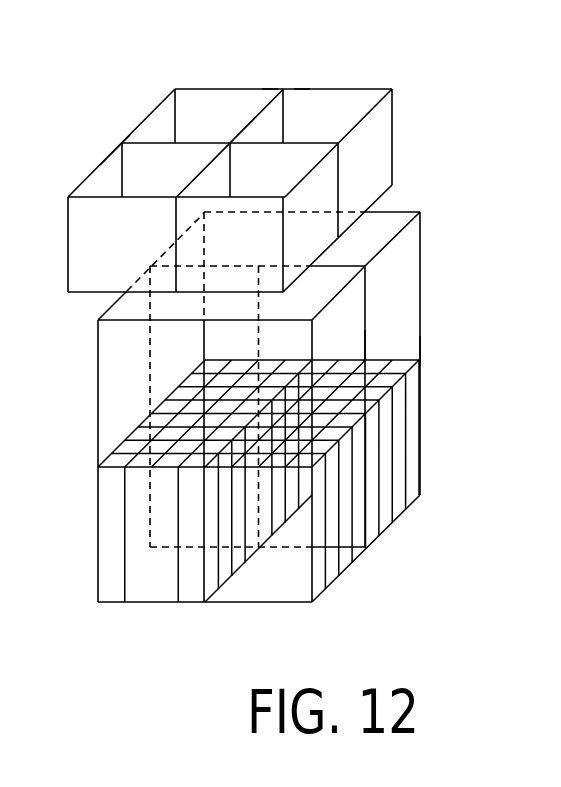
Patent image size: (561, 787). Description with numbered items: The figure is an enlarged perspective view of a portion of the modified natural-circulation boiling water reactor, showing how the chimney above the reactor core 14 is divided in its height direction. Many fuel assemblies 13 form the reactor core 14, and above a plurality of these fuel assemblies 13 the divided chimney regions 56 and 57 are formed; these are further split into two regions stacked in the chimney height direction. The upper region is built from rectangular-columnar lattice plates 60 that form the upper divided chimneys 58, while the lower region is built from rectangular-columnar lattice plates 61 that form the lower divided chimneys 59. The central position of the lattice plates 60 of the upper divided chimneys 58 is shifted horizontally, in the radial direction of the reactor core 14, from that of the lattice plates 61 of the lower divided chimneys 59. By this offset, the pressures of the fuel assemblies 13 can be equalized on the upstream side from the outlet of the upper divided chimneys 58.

The fuel assemblies 13 is at (413, 445).
The reactor core 14 is at (428, 417).
The divided chimney region 56 is at (409, 88).
The divided chimney region 57 is at (436, 210).
The upper divided chimneys 58 is at (302, 86).
The lower divided chimneys 59 is at (369, 347).
The lattice plates 60 is at (112, 152).
The lattice plates 61 is at (108, 369).